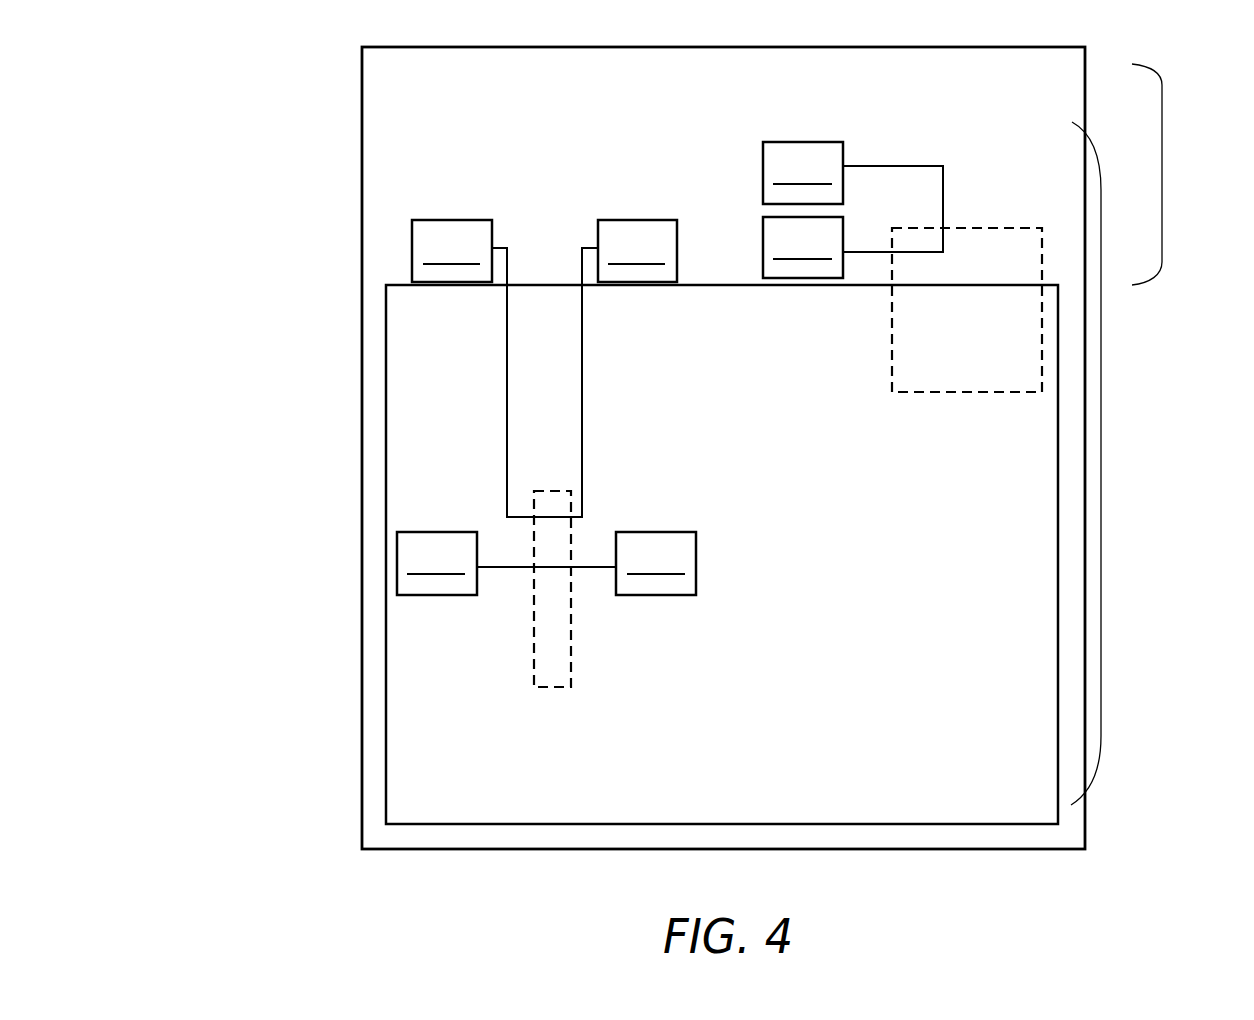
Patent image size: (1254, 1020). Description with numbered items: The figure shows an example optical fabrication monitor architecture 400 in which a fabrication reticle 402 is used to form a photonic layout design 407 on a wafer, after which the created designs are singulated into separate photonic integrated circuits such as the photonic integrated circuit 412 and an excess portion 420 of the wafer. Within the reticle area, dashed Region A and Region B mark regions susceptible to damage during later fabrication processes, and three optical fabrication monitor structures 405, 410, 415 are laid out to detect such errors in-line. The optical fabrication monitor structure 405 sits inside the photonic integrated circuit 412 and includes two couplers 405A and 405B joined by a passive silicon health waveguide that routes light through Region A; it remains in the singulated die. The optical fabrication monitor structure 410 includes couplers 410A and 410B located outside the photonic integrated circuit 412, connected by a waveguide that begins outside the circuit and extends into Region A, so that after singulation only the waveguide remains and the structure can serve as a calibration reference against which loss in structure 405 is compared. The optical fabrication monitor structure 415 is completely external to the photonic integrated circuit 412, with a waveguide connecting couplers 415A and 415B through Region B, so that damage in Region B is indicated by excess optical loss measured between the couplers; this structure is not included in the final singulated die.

The optical fabrication monitor architecture 400 is at (191, 87).
The fabrication reticle 402 is at (362, 143).
The photonic integrated circuit 412 is at (388, 373).
The optical fabrication monitor structure 410 is at (544, 318).
The coupler 410A is at (452, 251).
The coupler 410B is at (637, 251).
The optical fabrication monitor structure 415 is at (880, 185).
The optical coupler 415A is at (803, 173).
The optical coupler 415B is at (803, 247).
The optical fabrication monitor structure 405 is at (572, 608).
The coupler 405A is at (437, 563).
The coupler 405B is at (656, 563).
The excess portion 420 is at (1162, 175).
The photonic layout design 407 is at (1101, 464).